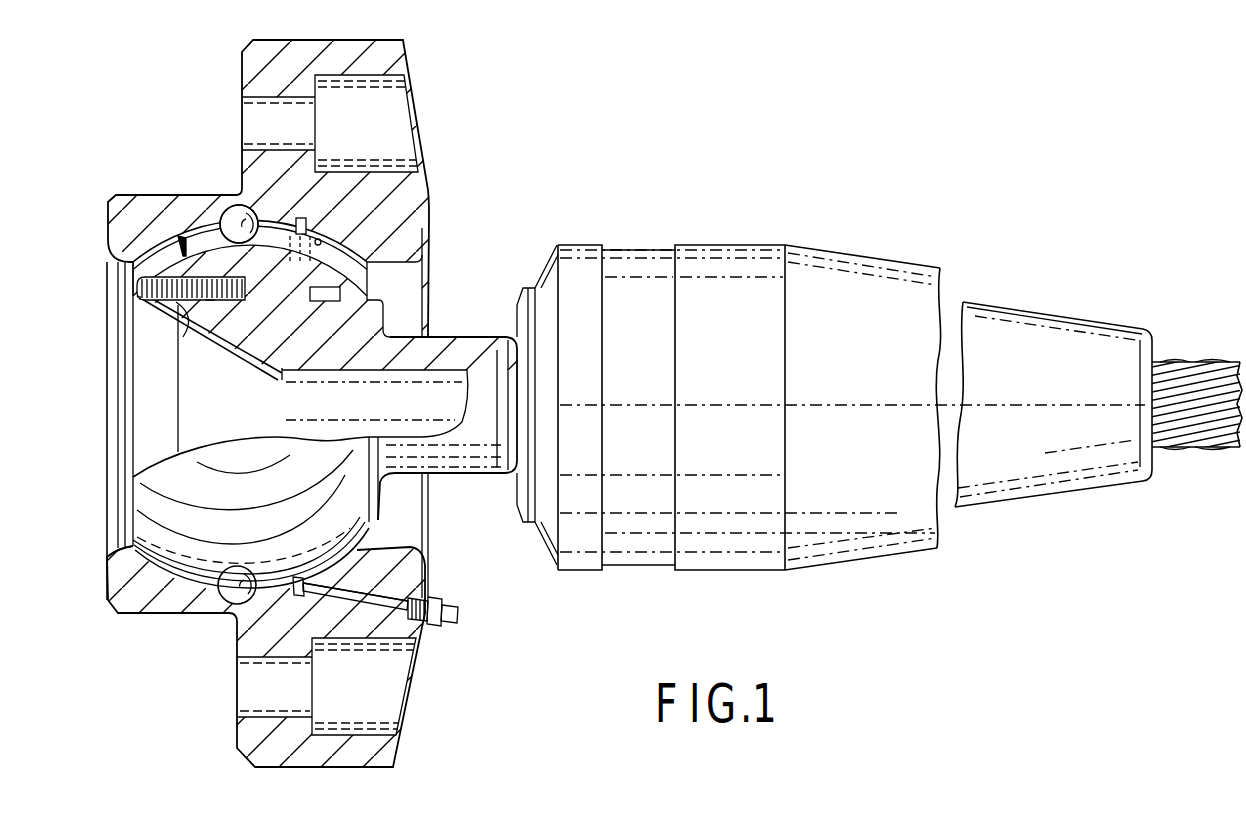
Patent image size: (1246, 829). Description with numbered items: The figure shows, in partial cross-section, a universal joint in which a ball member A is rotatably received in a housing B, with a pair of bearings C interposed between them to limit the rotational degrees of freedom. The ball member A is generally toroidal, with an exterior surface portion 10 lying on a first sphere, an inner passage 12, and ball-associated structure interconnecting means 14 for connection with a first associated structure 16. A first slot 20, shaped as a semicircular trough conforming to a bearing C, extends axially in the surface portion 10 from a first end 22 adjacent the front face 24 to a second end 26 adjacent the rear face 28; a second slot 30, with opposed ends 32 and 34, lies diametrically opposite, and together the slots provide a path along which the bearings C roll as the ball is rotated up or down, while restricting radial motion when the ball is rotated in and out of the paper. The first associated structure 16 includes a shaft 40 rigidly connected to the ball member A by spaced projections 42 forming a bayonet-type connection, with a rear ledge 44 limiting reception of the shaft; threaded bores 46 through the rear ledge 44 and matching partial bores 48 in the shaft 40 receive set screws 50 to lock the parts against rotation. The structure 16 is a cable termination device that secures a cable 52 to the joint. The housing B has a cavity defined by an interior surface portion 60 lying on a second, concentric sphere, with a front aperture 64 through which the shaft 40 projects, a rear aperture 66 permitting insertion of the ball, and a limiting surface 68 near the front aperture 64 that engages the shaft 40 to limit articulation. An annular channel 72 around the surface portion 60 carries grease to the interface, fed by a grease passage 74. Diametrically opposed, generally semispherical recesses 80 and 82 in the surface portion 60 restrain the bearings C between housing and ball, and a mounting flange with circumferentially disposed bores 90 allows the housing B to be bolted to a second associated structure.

The exterior surface portion 10 is at (370, 268).
The inner passage 12 is at (290, 292).
The ball-associated structure interconnecting means 14 is at (263, 347).
The first associated structure 16 is at (545, 251).
The first slot 20 is at (323, 260).
The first end 22 is at (363, 258).
The front face 24 is at (373, 283).
The second end 26 is at (145, 257).
The rear face 28 is at (133, 272).
The second slot 30 is at (330, 540).
The opposed end 32 is at (335, 518).
The opposed end 34 is at (130, 548).
The shaft 40 is at (447, 350).
The spaced projections 42 is at (328, 293).
The rear ledge 44 is at (183, 337).
The threaded bores 46 is at (173, 296).
The partial bores 48 is at (228, 303).
The set screws 50 is at (210, 305).
The cable 52 is at (1193, 362).
The interior surface portion 60 is at (321, 240).
The front aperture 64 is at (434, 247).
The rear aperture 66 is at (103, 266).
The limiting surface 68 is at (429, 255).
The annular channel 72 is at (303, 220).
The grease passage 74 is at (357, 603).
The first recess 80 is at (246, 210).
The second recess 82 is at (233, 602).
The bores 90 is at (320, 88).
The ball member A is at (181, 238).
The housing B is at (378, 57).
The bearings C is at (229, 207).